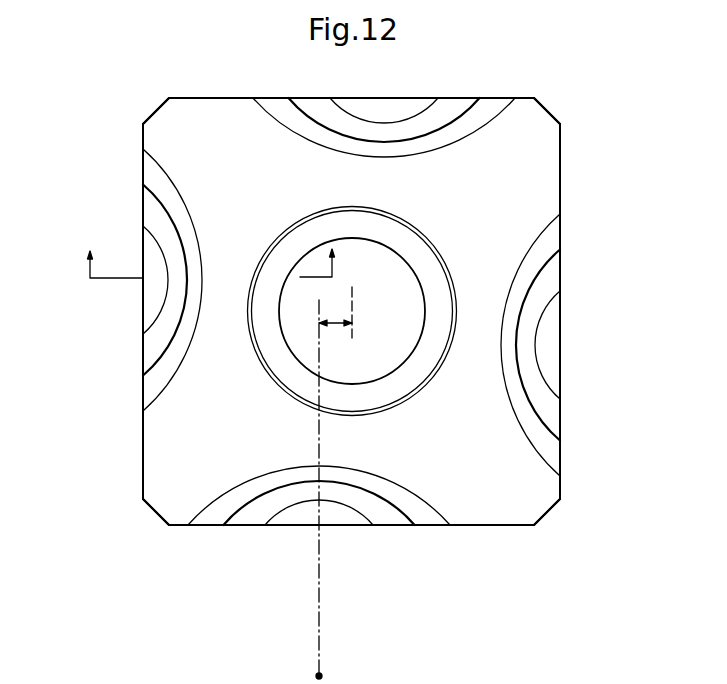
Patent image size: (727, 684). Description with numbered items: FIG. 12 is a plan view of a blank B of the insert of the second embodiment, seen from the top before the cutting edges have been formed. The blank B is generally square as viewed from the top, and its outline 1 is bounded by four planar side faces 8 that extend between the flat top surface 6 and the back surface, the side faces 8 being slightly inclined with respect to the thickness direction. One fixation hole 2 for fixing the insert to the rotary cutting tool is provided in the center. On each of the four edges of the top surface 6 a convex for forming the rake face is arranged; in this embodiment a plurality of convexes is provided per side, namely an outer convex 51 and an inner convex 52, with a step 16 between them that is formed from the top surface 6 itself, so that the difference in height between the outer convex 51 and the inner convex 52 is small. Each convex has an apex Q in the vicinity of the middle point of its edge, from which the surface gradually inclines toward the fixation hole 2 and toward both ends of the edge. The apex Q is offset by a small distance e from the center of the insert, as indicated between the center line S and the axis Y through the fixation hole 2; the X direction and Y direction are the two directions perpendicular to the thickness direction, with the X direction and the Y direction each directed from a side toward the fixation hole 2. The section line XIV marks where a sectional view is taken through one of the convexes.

The cutting insert body 1 is at (386, 311).
The fixation hole 2 is at (364, 311).
The top surface 6 is at (351, 280).
The side face 8 is at (385, 331).
The step 16 is at (348, 293).
The outer convex 51 is at (364, 311).
The inner convex 52 is at (363, 311).
The apex Q is at (353, 325).
The blank B is at (625, 89).
The section line XIV is at (212, 265).
The symmetry axis S is at (292, 489).
The Y direction Y is at (380, 312).
The offset distance e is at (335, 336).
The X direction X is at (369, 659).